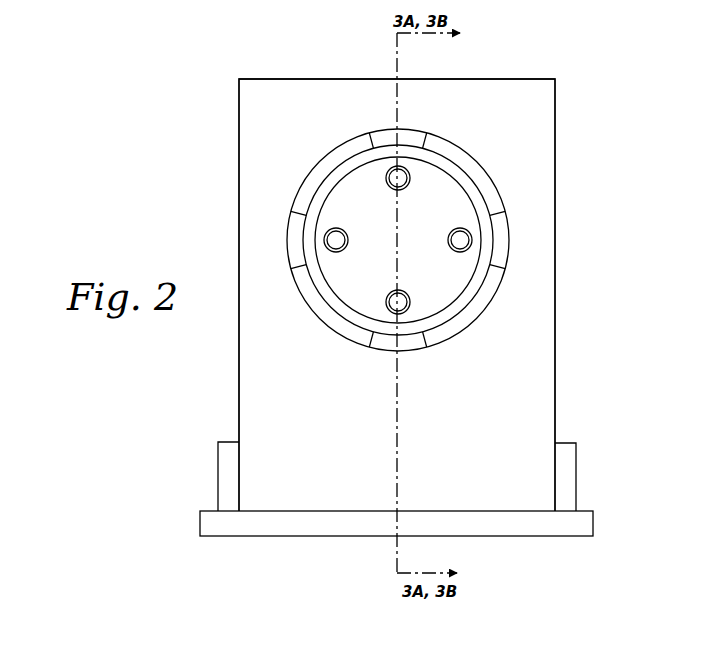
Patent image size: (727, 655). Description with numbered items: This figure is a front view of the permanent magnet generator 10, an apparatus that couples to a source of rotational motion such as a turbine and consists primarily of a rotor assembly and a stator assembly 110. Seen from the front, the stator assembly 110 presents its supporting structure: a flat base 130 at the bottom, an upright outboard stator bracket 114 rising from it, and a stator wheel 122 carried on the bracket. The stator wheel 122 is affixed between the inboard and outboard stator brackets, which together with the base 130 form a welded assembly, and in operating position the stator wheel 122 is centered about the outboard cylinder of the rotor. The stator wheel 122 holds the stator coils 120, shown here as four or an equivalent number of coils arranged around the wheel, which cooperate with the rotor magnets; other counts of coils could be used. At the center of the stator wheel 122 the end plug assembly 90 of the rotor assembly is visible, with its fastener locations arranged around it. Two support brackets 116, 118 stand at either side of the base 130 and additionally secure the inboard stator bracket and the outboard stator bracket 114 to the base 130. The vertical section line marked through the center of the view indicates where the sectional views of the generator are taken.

The permanent magnet generator 10 is at (135, 167).
The end plug assembly 90 is at (435, 193).
The stator assembly 110 is at (237, 117).
The outboard stator bracket 114 is at (520, 343).
The support bracket 116 is at (227, 468).
The support bracket 118 is at (565, 460).
The stator coils 120 is at (388, 137).
The stator wheel 122 is at (327, 157).
The base 130 is at (210, 523).